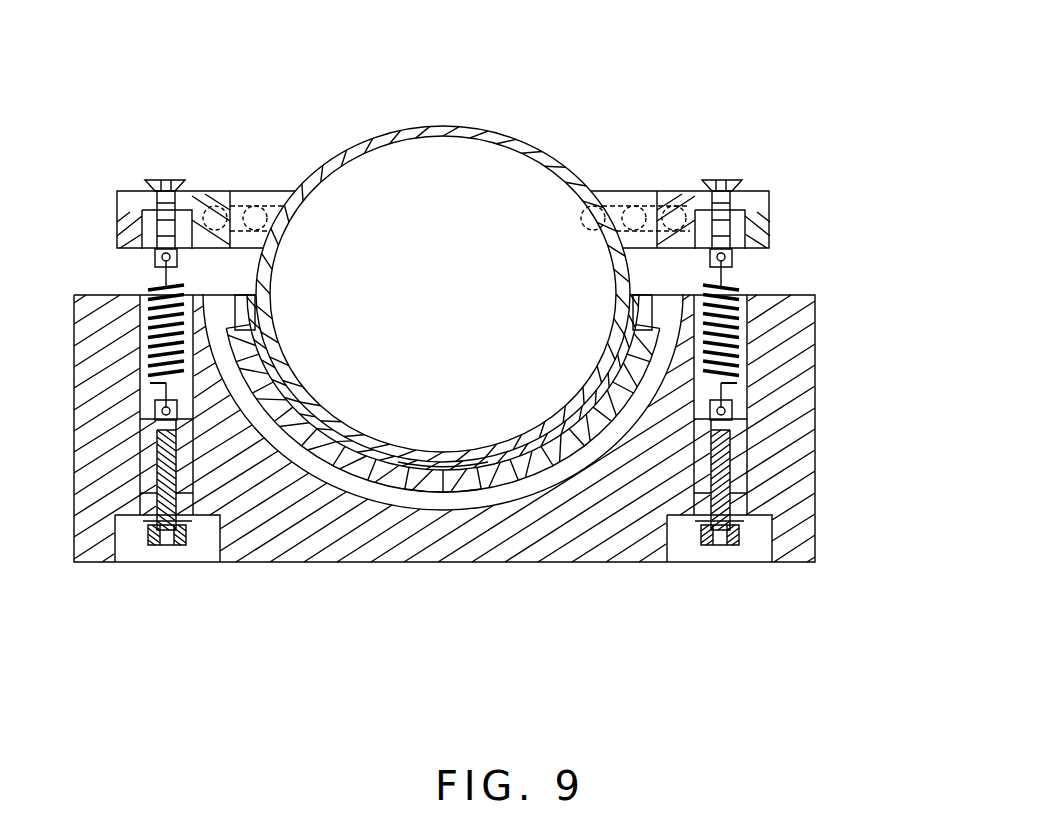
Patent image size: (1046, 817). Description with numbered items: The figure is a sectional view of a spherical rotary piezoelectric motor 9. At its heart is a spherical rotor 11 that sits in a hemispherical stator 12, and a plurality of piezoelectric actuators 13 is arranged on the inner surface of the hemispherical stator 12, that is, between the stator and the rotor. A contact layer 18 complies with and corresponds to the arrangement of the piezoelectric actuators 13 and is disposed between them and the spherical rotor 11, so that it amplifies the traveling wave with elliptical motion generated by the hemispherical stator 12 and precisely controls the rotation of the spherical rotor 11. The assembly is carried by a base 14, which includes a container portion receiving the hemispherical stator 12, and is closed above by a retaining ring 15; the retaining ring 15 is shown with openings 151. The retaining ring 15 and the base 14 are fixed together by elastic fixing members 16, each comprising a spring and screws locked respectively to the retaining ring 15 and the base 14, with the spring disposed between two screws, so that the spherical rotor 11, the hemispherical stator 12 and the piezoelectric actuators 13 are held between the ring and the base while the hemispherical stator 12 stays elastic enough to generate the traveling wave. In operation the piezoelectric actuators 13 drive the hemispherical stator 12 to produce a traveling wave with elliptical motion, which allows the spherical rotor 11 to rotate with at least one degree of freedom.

The spherical rotary piezoelectric motor 9 is at (615, 99).
The spherical rotor 11 is at (372, 132).
The hemispherical stator 12 is at (373, 490).
The piezoelectric actuators 13 is at (511, 470).
The base 14 is at (797, 344).
The retaining ring 15 is at (762, 221).
The holes of clamp bar 151 is at (628, 203).
The elastic fixing member 16 is at (722, 181).
The contact layer 18 is at (432, 468).